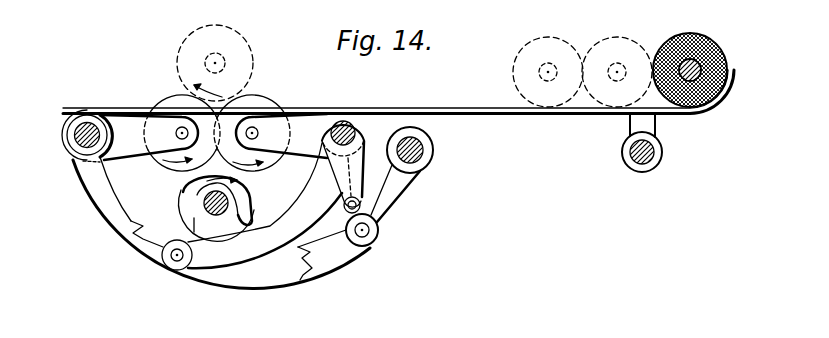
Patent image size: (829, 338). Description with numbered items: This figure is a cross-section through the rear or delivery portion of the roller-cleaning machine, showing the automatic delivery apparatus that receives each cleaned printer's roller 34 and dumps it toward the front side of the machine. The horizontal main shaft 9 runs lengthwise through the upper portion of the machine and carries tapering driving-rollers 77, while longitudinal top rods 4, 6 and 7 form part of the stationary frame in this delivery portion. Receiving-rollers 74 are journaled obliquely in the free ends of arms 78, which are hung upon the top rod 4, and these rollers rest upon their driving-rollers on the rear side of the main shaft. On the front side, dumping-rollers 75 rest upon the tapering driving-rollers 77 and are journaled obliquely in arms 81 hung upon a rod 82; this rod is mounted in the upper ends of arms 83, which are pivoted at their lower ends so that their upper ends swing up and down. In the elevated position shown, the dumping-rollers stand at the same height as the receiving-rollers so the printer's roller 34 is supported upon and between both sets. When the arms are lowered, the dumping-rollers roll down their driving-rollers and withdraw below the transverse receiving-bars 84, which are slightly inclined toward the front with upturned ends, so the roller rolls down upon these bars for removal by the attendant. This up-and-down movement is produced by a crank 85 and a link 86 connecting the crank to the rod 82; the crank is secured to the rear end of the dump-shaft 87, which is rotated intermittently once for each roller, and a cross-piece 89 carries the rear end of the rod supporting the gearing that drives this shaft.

The printer's roller 34 is at (193, 37).
The transverse receiving-bars 84 is at (503, 106).
The longitudinal top rod 4 is at (75, 139).
The arms 78 is at (149, 137).
The receiving-rollers 74 is at (160, 165).
The dumping-rollers 75 is at (268, 163).
The arms 81 is at (281, 136).
The rod 82 is at (357, 131).
The link 86 is at (357, 176).
The longitudinal top rod 6 is at (433, 150).
The crank 85 is at (368, 218).
The shaft 87 is at (368, 232).
The arms 83 is at (254, 206).
The cross-piece 89 is at (253, 277).
The main shaft 9 is at (203, 203).
The tapering driving-rollers 77 is at (247, 196).
The longitudinal top rod 7 is at (655, 152).